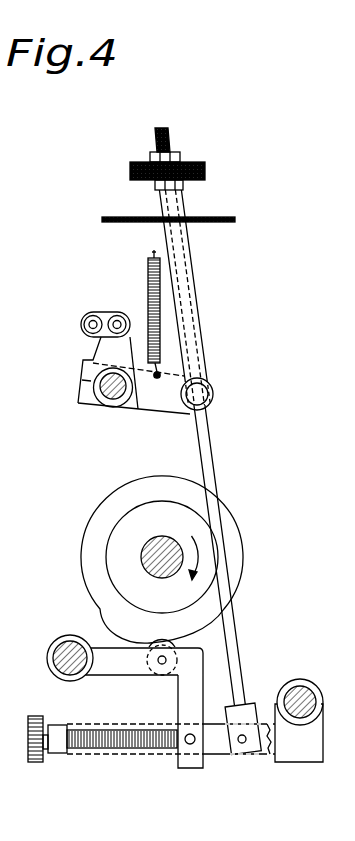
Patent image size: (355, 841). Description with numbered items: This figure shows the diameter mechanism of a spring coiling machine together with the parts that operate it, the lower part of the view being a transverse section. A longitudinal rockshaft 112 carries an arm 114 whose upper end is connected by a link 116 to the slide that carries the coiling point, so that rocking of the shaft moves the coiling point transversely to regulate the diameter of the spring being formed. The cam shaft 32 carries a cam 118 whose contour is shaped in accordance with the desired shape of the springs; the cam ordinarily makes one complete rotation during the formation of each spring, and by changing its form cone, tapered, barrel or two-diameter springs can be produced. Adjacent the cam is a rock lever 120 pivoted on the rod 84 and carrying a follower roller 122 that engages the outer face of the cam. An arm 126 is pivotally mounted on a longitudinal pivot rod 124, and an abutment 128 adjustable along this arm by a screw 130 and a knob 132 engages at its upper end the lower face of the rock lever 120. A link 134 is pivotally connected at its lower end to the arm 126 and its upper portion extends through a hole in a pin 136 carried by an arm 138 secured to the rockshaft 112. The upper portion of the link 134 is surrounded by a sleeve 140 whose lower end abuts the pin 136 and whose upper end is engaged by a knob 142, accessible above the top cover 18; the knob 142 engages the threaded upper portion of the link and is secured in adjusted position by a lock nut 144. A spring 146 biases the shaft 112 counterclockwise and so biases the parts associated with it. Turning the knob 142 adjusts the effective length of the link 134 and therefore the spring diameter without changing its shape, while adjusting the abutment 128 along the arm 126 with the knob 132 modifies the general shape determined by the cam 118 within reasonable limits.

The top cover 18 is at (203, 220).
The cam shaft 32 is at (168, 542).
The rod 84 is at (70, 647).
The rockshaft 112 is at (113, 396).
The arm 114 is at (102, 345).
The link 116 is at (104, 318).
The cam 118 is at (234, 542).
The rock lever 120 is at (117, 668).
The follower roller 122 is at (155, 673).
The pivot rod 124 is at (295, 690).
The arm 126 is at (100, 729).
The abutment 128 is at (195, 706).
The screw 130 is at (80, 746).
The knob 132 is at (35, 728).
The link 134 is at (211, 472).
The pin 136 is at (208, 394).
The arm 138 is at (160, 405).
The sleeve 140 is at (187, 280).
The knob 142 is at (204, 163).
The lock nut 144 is at (175, 153).
The spring 146 is at (148, 275).